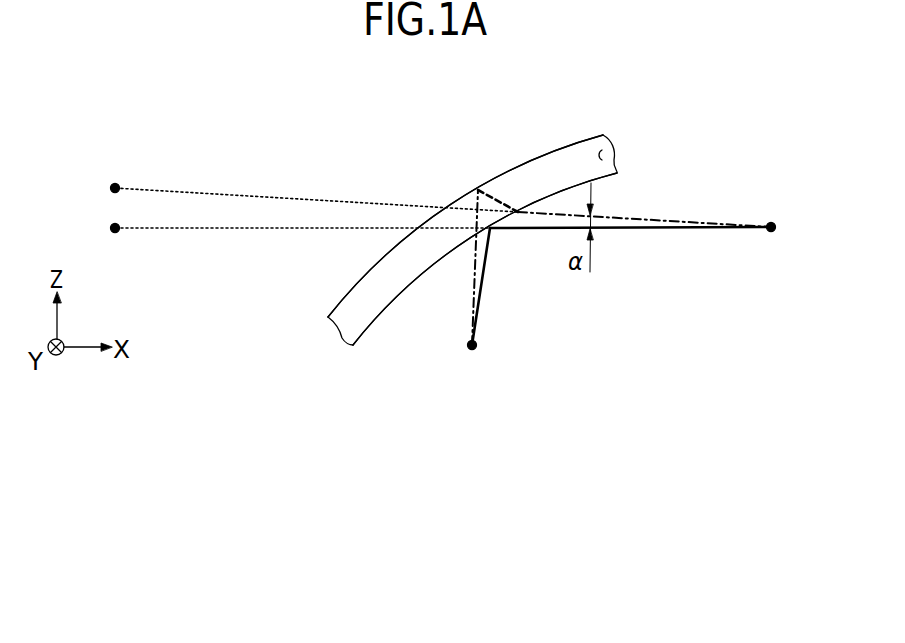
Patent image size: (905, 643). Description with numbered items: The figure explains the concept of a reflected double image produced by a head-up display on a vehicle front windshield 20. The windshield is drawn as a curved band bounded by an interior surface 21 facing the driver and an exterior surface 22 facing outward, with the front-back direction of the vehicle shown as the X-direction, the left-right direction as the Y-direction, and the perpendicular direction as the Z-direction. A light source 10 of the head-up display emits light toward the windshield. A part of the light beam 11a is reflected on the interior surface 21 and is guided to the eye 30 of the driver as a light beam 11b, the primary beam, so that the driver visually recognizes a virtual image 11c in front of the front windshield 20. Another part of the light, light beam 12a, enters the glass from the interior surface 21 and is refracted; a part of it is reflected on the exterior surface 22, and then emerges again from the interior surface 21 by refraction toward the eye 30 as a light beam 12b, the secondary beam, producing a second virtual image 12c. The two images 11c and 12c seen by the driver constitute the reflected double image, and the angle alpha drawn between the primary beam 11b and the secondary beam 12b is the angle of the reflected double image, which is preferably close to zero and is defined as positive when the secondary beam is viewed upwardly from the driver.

The light source 10 is at (467, 352).
The light beam 11a is at (486, 267).
The light beam (primary beam) 11b is at (620, 229).
The image (virtual image) 11c is at (110, 227).
The light beam 12a is at (475, 264).
The light beam (secondary beam) 12b is at (632, 218).
The image (virtual image) 12c is at (110, 186).
The front windshield 20 is at (607, 140).
The interior surface 21 is at (622, 178).
The exterior surface 22 is at (540, 158).
The eye 30 is at (776, 224).